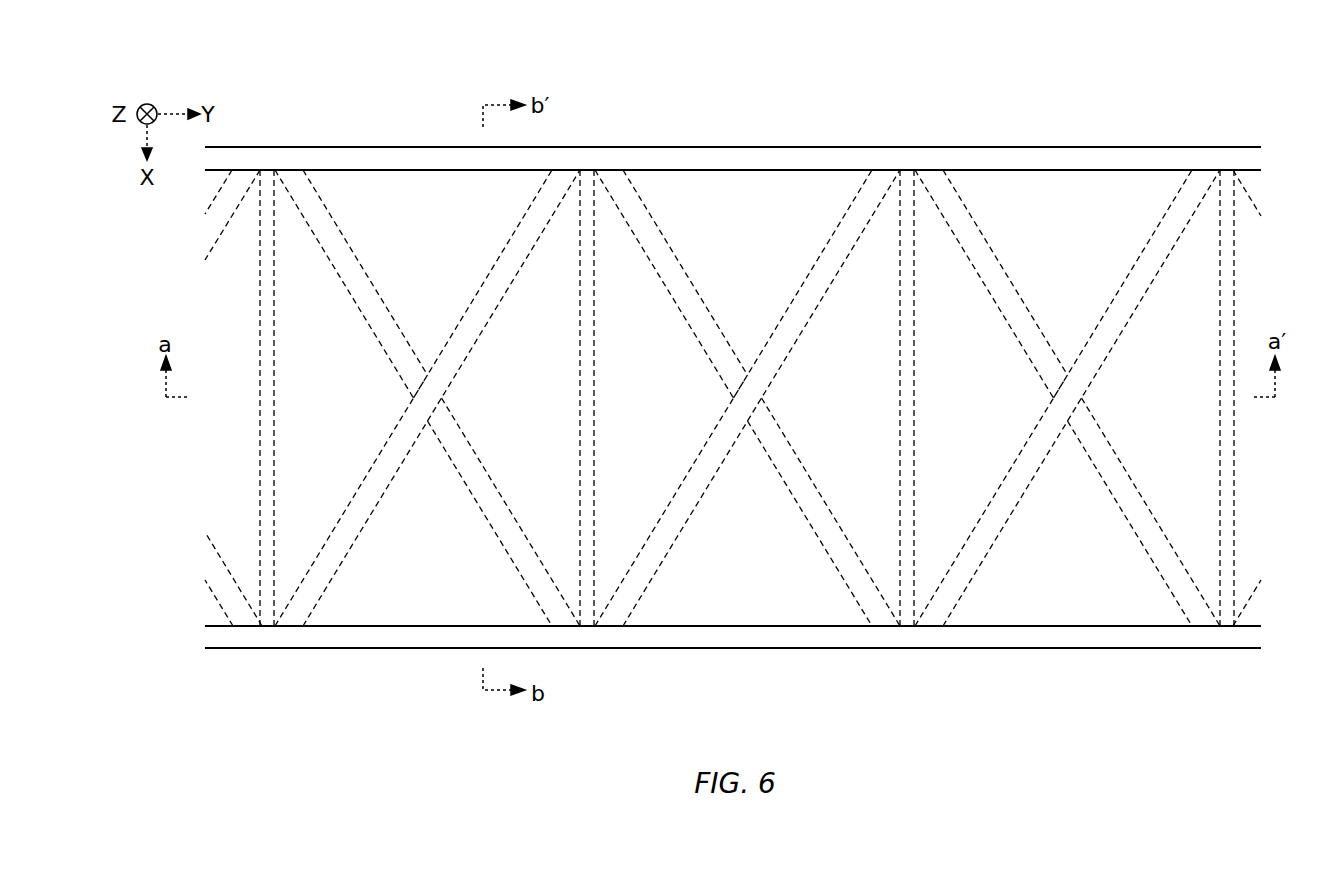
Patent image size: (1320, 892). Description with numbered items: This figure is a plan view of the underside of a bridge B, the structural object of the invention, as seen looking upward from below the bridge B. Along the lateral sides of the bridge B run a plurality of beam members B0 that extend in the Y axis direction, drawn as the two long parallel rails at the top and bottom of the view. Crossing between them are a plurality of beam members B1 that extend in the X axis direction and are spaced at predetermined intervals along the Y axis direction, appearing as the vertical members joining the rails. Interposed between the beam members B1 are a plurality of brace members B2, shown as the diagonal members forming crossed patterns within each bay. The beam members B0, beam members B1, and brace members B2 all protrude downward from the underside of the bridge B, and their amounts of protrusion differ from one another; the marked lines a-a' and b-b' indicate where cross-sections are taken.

The bridge B is at (1137, 147).
The beam member B0 is at (913, 160).
The beam member B1 is at (268, 573).
The brace member B2 is at (372, 308).